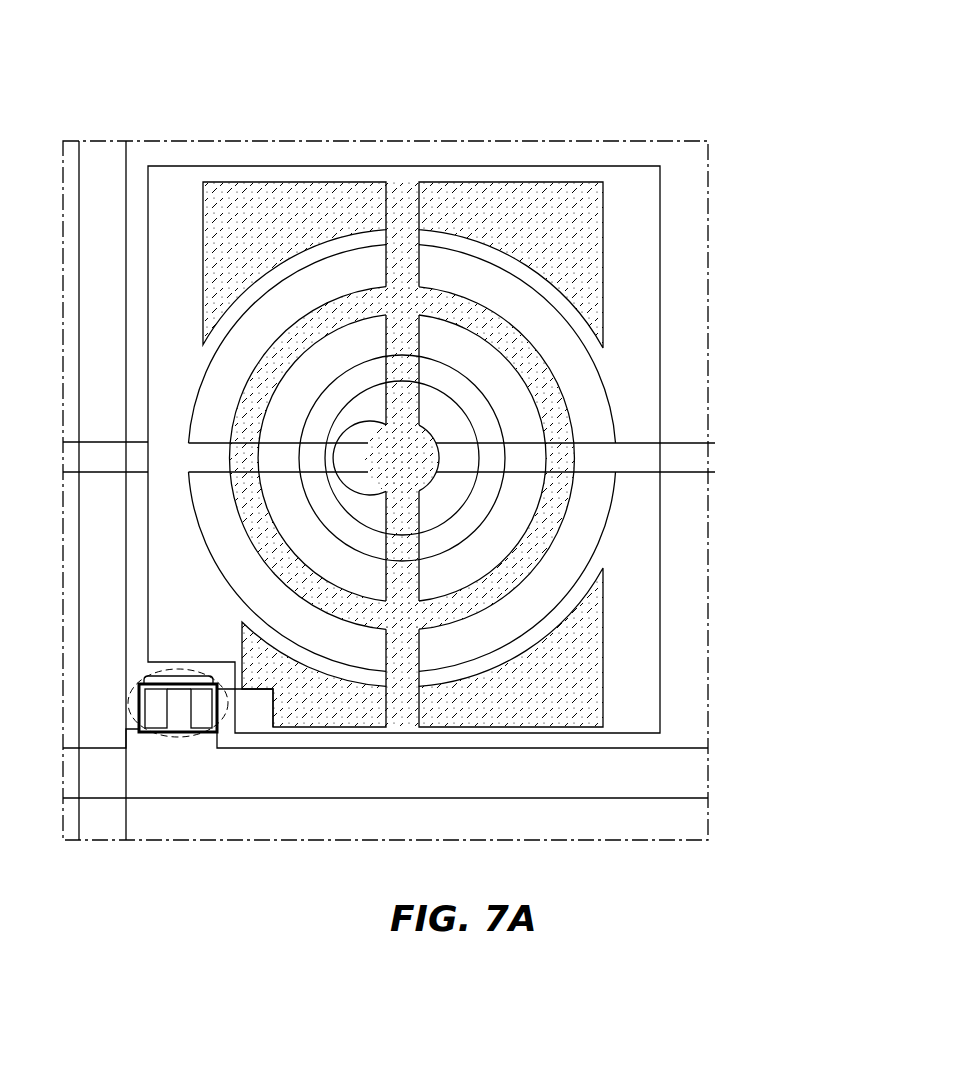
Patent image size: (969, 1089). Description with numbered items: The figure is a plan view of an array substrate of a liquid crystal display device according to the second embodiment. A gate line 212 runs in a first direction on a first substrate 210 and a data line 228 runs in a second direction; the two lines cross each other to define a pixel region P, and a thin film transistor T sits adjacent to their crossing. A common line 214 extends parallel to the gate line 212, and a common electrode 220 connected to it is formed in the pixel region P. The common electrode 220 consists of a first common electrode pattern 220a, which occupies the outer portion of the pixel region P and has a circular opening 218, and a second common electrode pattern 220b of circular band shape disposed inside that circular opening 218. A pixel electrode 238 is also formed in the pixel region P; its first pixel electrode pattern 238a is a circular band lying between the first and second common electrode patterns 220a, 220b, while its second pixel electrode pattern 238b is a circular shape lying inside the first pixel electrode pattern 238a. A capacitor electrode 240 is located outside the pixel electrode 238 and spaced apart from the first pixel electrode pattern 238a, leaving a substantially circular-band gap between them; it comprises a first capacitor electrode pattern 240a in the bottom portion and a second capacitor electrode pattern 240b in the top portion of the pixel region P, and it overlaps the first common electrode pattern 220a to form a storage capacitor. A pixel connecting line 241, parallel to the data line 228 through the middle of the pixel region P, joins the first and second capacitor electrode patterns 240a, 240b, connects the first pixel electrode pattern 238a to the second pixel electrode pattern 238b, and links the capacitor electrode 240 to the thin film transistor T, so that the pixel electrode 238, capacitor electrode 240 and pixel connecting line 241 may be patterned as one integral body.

The first substrate 210 is at (657, 140).
The gate line 212 is at (715, 748).
The common line 214 is at (715, 443).
The circular opening 218 is at (363, 270).
The common electrode 220 is at (277, 52).
The first common electrode pattern 220a is at (175, 187).
The second common electrode pattern 220b is at (365, 370).
The data line 228 is at (126, 855).
The pixel electrode 238 is at (575, 70).
The first pixel electrode pattern 238a is at (438, 306).
The second pixel electrode pattern 238b is at (401, 455).
The capacitor electrode 240 is at (823, 267).
The first capacitor electrode pattern 240a is at (585, 670).
The second capacitor electrode pattern 240b is at (585, 262).
The pixel connecting line 241 is at (412, 572).
The pixel region P is at (136, 232).
The thin film transistor T is at (178, 738).